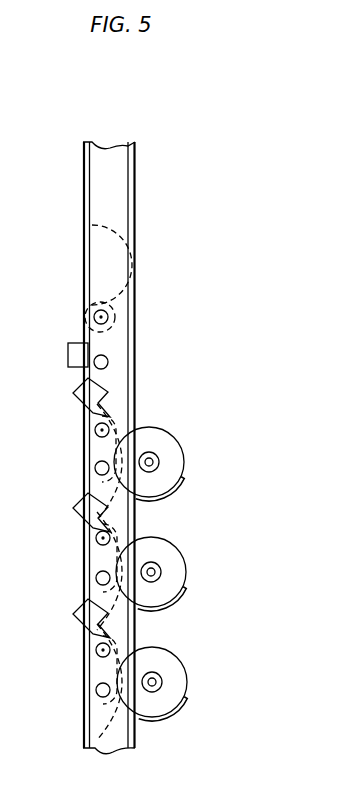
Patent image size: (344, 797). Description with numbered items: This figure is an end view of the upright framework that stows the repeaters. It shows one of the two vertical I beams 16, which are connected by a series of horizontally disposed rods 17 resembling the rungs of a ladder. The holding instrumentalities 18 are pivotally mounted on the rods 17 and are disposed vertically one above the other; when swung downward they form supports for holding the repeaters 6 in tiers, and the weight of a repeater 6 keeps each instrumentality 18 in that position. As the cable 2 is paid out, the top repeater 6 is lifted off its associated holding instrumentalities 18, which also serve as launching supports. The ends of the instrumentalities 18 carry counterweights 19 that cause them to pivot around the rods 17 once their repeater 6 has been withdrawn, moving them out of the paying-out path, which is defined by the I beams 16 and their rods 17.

The vertical I beam 16 is at (110, 153).
The counterweight 19 is at (68, 361).
The horizontally disposed rod 17 is at (97, 437).
The repeater 6 is at (170, 451).
The cable 2 is at (157, 464).
The holding instrumentality 18 is at (168, 718).